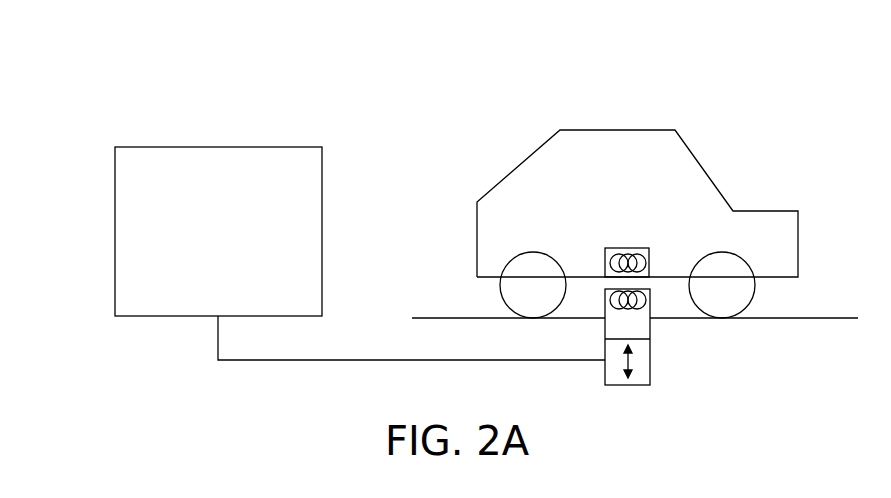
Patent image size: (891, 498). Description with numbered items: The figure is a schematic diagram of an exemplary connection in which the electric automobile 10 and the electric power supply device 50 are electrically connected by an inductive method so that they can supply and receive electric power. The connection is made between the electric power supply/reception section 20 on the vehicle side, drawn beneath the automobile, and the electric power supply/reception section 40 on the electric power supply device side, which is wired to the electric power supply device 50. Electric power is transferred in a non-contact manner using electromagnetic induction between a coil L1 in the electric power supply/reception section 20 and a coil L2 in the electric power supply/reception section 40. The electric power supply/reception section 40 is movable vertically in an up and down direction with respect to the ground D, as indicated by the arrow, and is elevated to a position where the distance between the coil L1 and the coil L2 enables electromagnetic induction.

The electric power supply device 50 is at (290, 147).
The electric automobile 10 is at (623, 130).
The electric power supply/reception section on the vehicle side 20 is at (630, 248).
The coil L1 is at (612, 262).
The electric power supply/reception section on the electric power supply device side 40 is at (652, 325).
The coil L2 is at (617, 308).
The ground D is at (832, 318).